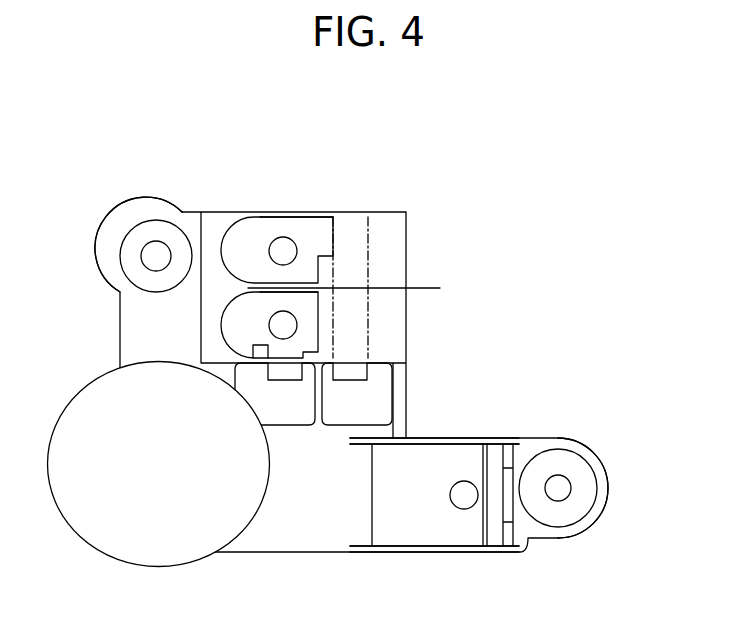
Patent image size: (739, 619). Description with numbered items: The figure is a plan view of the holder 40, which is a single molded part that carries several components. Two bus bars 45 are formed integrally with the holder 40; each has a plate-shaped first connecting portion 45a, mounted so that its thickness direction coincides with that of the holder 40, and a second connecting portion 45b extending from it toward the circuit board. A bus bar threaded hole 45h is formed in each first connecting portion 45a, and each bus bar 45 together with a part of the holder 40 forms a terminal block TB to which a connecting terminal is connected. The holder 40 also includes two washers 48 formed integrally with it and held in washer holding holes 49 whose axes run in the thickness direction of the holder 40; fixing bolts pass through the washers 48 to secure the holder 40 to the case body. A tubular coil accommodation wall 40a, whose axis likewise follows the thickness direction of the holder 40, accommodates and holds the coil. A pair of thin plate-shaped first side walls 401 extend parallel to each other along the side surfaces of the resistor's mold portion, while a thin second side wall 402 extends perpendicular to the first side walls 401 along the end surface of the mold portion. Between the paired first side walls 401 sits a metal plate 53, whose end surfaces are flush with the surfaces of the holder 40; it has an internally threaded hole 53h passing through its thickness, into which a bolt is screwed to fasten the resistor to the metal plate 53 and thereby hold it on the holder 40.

The holder 40 is at (115, 226).
The coil accommodation wall 40a is at (67, 405).
The bus bar 45 is at (238, 226).
The first connecting portion 45a is at (325, 223).
The second connecting portion 45b is at (345, 382).
The bus bar threaded hole 45h is at (280, 246).
The washer 48 is at (122, 258).
The washer holding hole 49 is at (135, 236).
The metal plate 53 is at (382, 489).
The internally threaded hole 53h is at (464, 484).
The first side wall 401 is at (428, 437).
The second side wall 402 is at (507, 512).
The terminal block TB is at (243, 206).